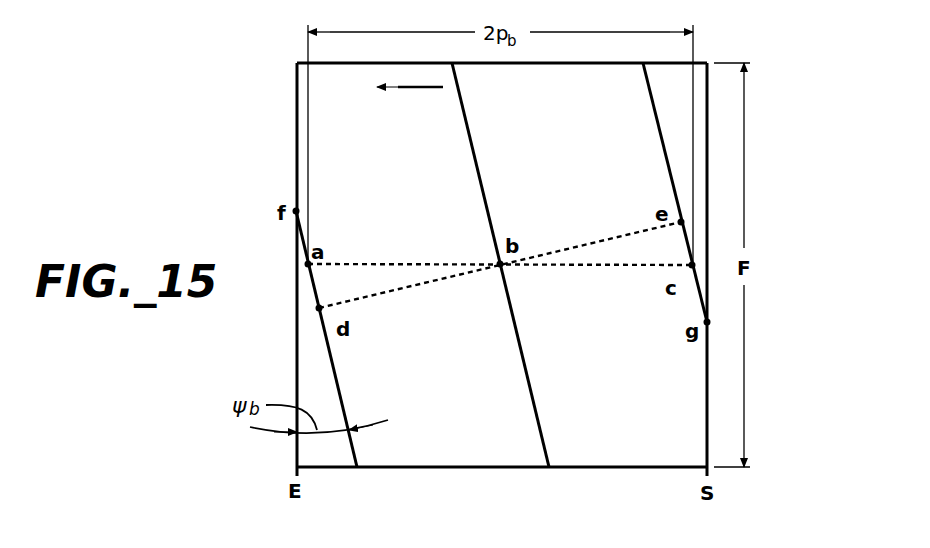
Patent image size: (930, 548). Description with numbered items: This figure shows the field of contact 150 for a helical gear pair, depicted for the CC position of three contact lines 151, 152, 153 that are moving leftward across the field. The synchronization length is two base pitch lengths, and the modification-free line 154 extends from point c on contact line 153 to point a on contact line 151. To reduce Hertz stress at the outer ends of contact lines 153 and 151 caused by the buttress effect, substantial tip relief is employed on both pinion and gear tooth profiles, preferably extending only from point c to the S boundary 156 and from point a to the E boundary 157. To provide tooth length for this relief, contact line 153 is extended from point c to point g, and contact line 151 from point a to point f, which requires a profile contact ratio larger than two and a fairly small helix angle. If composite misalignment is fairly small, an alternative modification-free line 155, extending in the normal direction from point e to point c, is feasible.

The field of contact 150 is at (579, 265).
The contact line 151 is at (333, 362).
The contact line 152 is at (472, 128).
The contact line 153 is at (660, 134).
The modification-free line 154 is at (370, 264).
The alternative modification-free line 155 is at (387, 296).
The S boundary 156 is at (707, 370).
The E boundary 157 is at (297, 380).